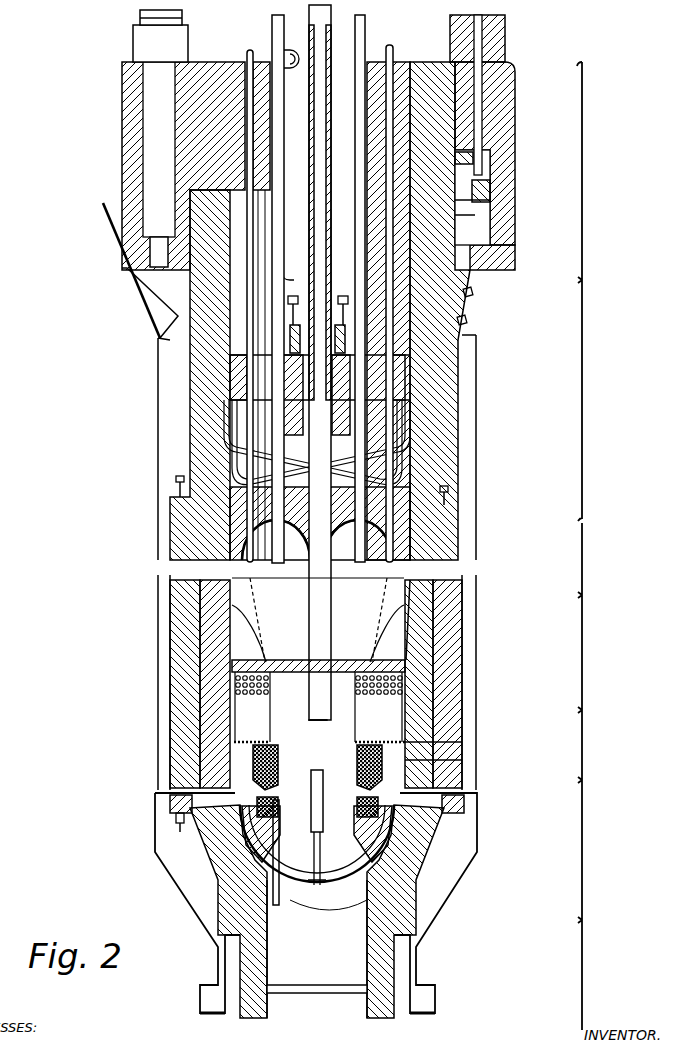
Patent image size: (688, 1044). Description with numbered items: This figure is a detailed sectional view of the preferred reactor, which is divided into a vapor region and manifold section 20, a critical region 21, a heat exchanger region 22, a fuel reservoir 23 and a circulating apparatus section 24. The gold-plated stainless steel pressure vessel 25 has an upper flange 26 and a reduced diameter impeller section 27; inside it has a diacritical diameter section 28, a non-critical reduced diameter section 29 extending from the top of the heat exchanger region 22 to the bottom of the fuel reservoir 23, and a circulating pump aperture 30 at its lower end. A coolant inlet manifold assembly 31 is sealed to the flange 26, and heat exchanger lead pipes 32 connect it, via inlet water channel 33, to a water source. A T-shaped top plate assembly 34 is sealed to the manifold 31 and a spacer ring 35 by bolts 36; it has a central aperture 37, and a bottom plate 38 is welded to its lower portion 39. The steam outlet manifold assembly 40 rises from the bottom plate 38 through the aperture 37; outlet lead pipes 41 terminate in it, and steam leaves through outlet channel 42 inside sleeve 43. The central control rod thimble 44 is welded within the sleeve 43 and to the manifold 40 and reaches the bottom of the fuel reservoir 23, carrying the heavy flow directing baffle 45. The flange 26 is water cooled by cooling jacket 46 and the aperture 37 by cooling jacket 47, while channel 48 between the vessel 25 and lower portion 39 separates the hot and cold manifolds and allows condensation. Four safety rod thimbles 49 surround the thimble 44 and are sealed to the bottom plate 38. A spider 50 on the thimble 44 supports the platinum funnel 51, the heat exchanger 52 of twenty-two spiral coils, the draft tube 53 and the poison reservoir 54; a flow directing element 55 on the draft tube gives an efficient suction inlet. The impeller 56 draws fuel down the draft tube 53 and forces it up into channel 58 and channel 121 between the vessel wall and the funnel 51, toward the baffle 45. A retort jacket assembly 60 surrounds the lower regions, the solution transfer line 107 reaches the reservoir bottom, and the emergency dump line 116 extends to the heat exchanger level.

The vapor region and manifold section 20 is at (594, 291).
The critical region 21 is at (594, 586).
The heat exchanger region 22 is at (594, 697).
The fuel reservoir 23 is at (594, 797).
The circulating apparatus section 24 is at (594, 940).
The pressure vessel 25 is at (210, 765).
The upper flange 26 is at (516, 257).
The reduced diameter impeller section 27 is at (412, 920).
The diacritical diameter section 28 is at (228, 545).
The non-critical reduced diameter section 29 is at (236, 752).
The circulating pump aperture 30 is at (395, 925).
The coolant inlet manifold assembly 31 is at (473, 160).
The heat exchanger lead pipes 32 is at (410, 388).
The inlet water channel 33 is at (494, 204).
The top plate assembly 34 is at (516, 112).
The spacer ring 35 is at (500, 190).
The bolts 36 is at (505, 40).
The central aperture 37 is at (360, 72).
The bottom plate 38 is at (236, 366).
The lower portion 39 is at (235, 286).
The steam outlet manifold assembly 40 is at (355, 428).
The outlet lead pipes 41 is at (290, 443).
The outlet channel 42 is at (425, 400).
The sleeve 43 is at (330, 222).
The central control rod thimble 44 is at (331, 92).
The liquid fuel flow directing baffle 45 is at (400, 498).
The cooling jacket 46 is at (468, 295).
The cooling jacket 47 is at (253, 58).
The channel 48 is at (450, 300).
The safety rod thimbles 49 is at (276, 105).
The spider 50 is at (410, 668).
The platinum funnel 51 is at (253, 568).
The heat exchanger 52 is at (240, 700).
The draft tube 53 is at (315, 760).
The poison reservoir 54 is at (262, 762).
The flow directing element 55 is at (440, 846).
The impeller 56 is at (250, 850).
The channel 58 is at (388, 752).
The retort jacket assembly 60 is at (158, 610).
The solution transfer line 107 is at (246, 53).
The emergency dump line 116 is at (393, 47).
The channel 121 is at (176, 819).